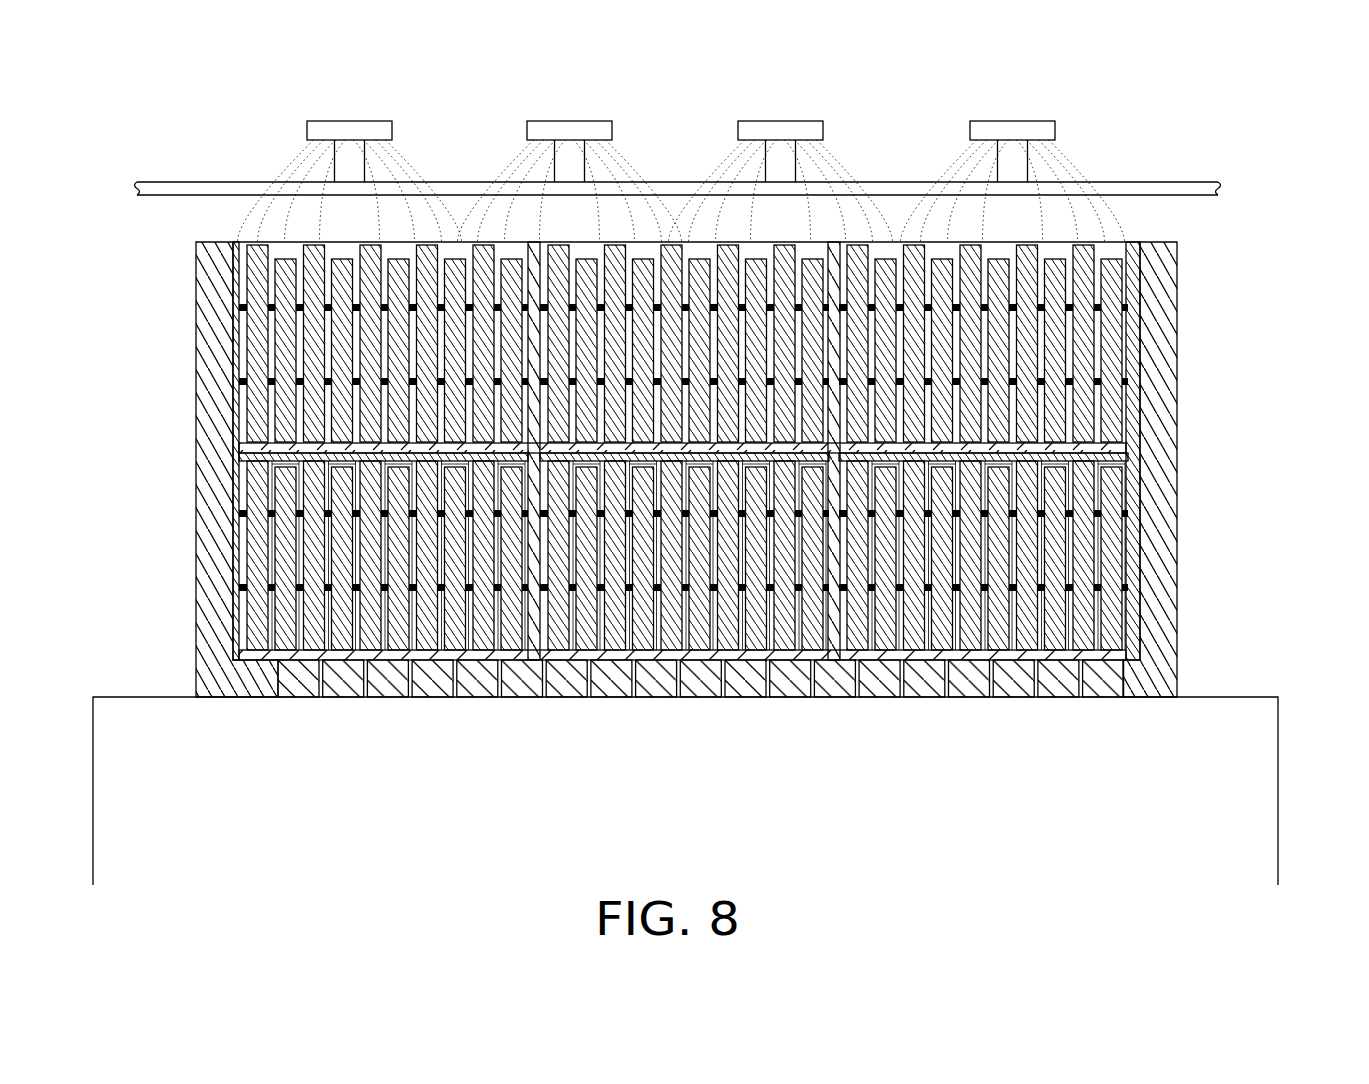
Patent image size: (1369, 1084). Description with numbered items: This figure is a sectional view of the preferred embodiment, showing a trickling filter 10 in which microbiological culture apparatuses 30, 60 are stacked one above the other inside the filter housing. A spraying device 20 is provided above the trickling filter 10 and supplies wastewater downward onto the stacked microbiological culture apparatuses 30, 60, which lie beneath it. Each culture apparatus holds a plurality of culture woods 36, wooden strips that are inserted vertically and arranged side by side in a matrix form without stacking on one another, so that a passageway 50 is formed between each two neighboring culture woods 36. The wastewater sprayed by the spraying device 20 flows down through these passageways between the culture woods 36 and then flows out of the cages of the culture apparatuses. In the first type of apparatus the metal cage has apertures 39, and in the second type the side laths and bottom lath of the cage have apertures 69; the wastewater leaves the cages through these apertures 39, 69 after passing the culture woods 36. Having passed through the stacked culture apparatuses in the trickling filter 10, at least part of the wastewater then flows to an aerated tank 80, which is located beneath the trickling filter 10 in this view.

The trickling filter 10 is at (1180, 450).
The spraying device 20 is at (1124, 133).
The microbiological culture apparatus 30 is at (795, 451).
The microbiological culture apparatus 60 is at (1145, 337).
The culture woods 36 is at (287, 363).
The passageway 50 is at (297, 400).
The apertures 39 is at (681, 731).
The apertures 69 is at (302, 655).
The aerated tank 80 is at (1221, 743).